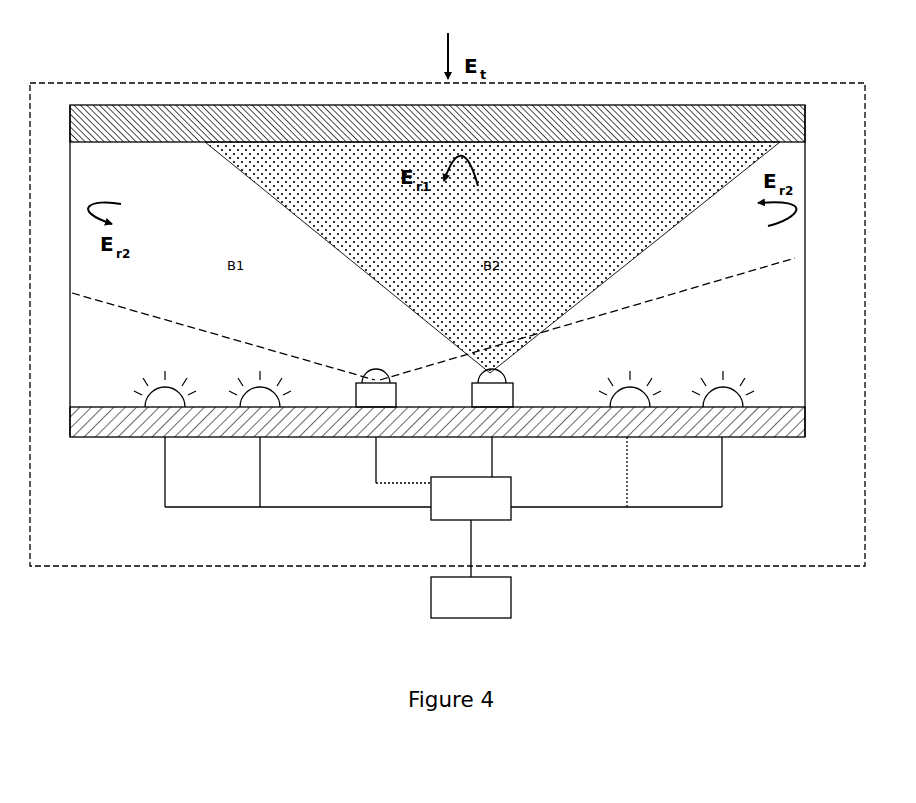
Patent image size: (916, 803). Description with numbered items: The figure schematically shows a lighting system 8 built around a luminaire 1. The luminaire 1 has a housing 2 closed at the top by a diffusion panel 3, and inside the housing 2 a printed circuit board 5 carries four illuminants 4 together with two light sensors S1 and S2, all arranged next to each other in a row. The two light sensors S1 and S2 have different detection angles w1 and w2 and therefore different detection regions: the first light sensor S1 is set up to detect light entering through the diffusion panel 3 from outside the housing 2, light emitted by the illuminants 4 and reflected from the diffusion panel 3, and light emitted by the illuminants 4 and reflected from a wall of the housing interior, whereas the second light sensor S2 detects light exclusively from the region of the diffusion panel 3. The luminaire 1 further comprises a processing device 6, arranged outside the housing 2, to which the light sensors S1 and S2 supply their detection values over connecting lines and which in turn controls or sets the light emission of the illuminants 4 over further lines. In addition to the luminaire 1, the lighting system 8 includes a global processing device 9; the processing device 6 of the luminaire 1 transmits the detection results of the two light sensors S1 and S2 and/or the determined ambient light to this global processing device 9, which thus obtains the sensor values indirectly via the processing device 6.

The luminaire 1 is at (869, 274).
The housing 2 is at (807, 302).
The diffusion panel 3 is at (806, 132).
The illuminants 4 is at (180, 405).
The printed circuit board 5 is at (808, 433).
The processing device 6 is at (515, 514).
The lighting system 8 is at (772, 599).
The global processing device 9 is at (515, 591).
The first light sensor S1 is at (387, 402).
The second light sensor S2 is at (505, 402).
The detection angle of the first light sensor w1 is at (394, 380).
The detection angle of the second light sensor w2 is at (507, 380).